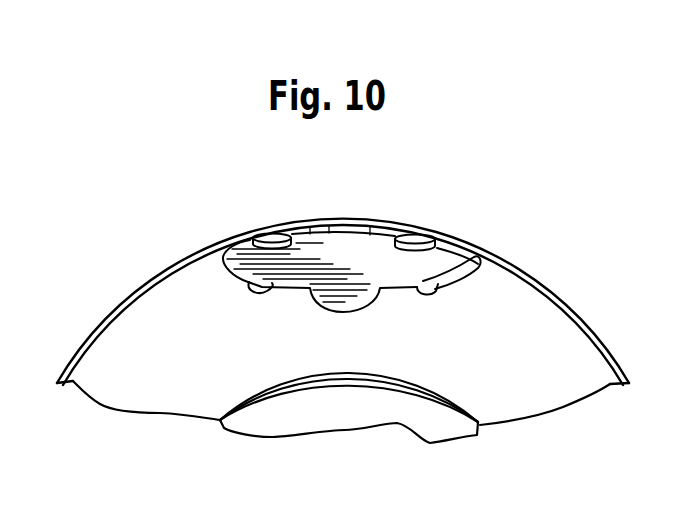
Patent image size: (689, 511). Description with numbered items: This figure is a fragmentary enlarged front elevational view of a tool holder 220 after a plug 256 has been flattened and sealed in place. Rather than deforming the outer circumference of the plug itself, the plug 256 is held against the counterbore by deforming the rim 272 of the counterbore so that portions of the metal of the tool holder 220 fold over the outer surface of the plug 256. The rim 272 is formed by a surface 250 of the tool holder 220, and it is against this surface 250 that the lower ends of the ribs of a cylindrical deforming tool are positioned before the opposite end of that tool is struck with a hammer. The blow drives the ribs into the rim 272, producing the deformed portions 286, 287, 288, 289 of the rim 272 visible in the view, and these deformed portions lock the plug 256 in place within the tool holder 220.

The tool holder 220 is at (149, 283).
The surface of the tool holder 250 is at (157, 390).
The plug 256 is at (345, 275).
The rim 272 is at (390, 283).
The deformed portion of the rim 286 is at (272, 238).
The deformed portion of the rim 287 is at (417, 239).
The deformed portion of the rim 288 is at (258, 285).
The deformed portion of the rim 289 is at (478, 257).